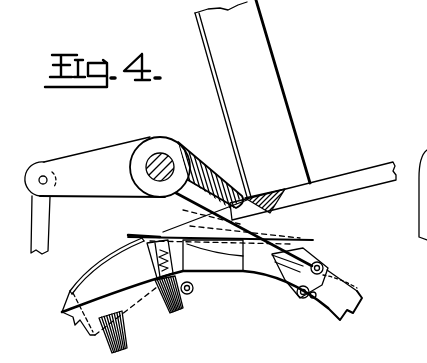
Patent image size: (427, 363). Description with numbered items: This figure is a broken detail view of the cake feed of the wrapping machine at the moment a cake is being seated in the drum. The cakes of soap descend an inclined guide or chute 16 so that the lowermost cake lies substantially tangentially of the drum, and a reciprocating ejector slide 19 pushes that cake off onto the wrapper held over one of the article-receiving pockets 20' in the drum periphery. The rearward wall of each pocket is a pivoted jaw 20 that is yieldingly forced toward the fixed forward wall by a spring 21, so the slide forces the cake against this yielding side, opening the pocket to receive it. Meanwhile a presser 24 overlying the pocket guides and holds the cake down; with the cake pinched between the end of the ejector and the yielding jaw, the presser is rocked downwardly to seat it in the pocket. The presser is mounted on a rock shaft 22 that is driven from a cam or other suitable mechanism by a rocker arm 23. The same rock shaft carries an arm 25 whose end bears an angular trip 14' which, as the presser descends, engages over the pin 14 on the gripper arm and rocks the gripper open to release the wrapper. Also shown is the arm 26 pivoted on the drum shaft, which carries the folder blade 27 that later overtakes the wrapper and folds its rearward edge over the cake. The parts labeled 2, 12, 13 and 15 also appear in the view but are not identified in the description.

The wheel rim 2 is at (78, 354).
The pivot pin 12 is at (308, 252).
The rim end segment 13 is at (313, 297).
The pin 14 is at (299, 309).
The angular trip 14' is at (331, 267).
The dog 15 is at (340, 275).
The guide or chute 16 is at (222, 68).
The ejector slide 19 is at (365, 173).
The pivoted jaws 20 is at (212, 273).
The article-receiving pockets 20' is at (275, 195).
The springs 21 is at (158, 268).
The rock shaft 22 is at (157, 158).
The rocker arm 23 is at (95, 167).
The presser 24 is at (212, 174).
The arm 25 is at (283, 241).
The arm 26 is at (124, 336).
The folder blade 27 is at (113, 261).